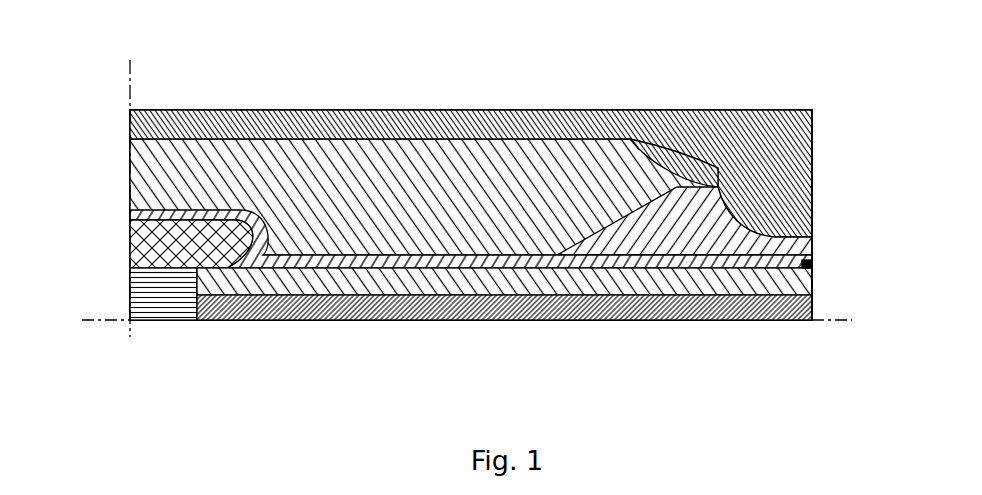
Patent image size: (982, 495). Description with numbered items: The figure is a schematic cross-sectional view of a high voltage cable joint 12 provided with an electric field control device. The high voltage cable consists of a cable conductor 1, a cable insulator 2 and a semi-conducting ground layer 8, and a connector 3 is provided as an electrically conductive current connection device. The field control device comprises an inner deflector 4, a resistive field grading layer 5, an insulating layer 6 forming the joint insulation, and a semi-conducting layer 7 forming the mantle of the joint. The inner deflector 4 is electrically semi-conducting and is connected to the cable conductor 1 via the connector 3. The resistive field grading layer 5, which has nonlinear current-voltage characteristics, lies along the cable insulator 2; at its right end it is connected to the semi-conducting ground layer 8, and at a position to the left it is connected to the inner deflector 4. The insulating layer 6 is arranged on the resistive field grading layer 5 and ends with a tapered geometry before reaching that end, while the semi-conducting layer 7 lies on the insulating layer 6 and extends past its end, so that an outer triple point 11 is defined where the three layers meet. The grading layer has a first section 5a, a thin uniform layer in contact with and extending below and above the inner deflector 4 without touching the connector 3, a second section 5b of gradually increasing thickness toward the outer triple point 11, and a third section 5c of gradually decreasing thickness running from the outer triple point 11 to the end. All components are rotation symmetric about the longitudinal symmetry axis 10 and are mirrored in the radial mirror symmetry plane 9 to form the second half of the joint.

The cable conductor 1 is at (590, 307).
The cable insulator 2 is at (635, 285).
The connector 3 is at (142, 295).
The inner deflector 4 is at (150, 245).
The resistive field grading layer 5 is at (707, 242).
The first section 5a is at (284, 258).
The second section 5b is at (640, 252).
The third section 5c is at (777, 250).
The insulating layer 6 is at (142, 182).
The semi-conducting layer 7 is at (770, 143).
The semi-conducting ground layer 8 is at (808, 270).
The mirror symmetry plane 9 is at (132, 98).
The rotational symmetry axis 10 is at (833, 322).
The outer triple point 11 is at (630, 139).
The cable joint 12 is at (740, 45).